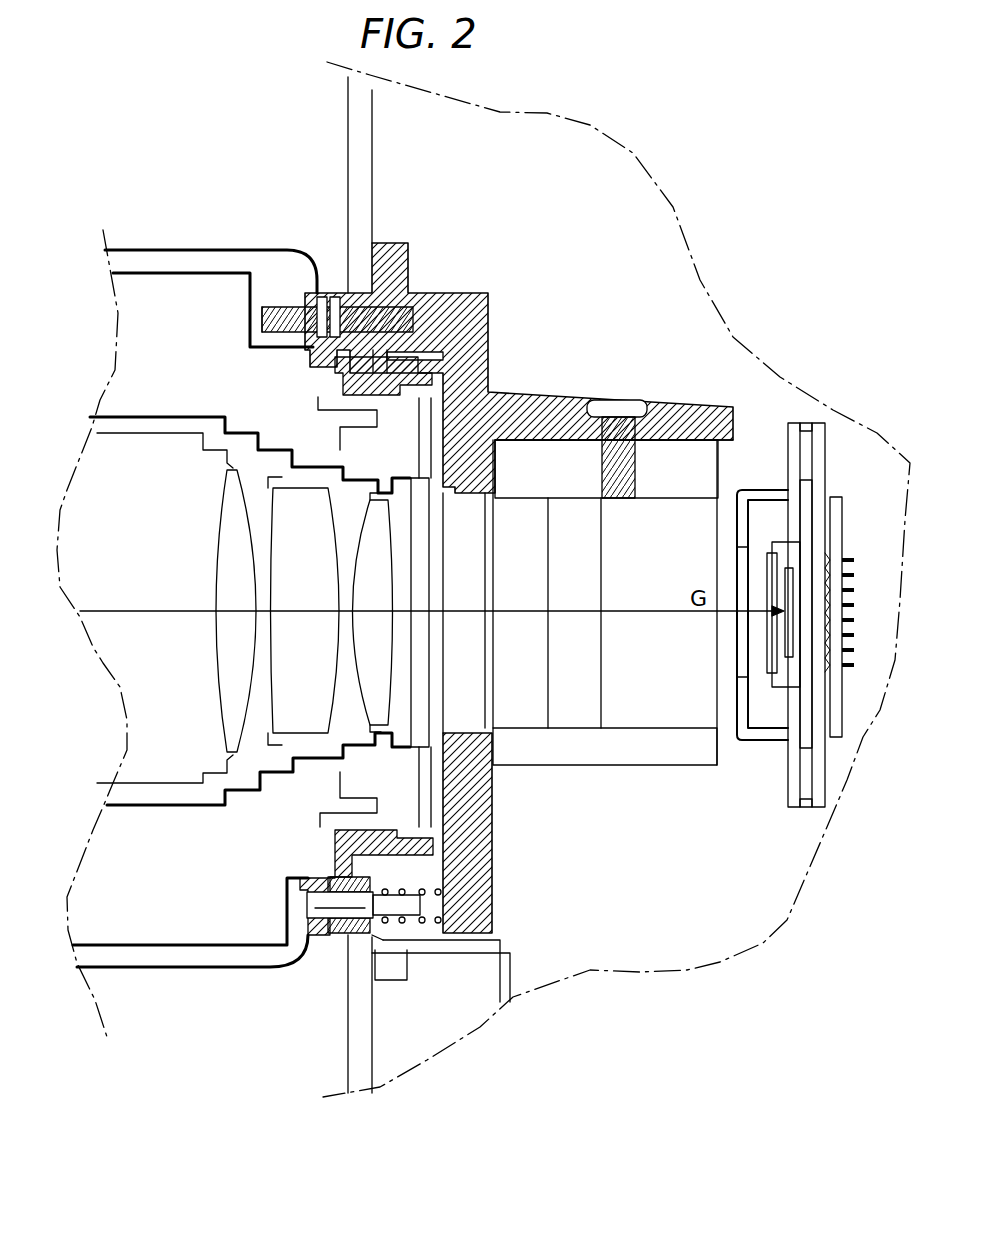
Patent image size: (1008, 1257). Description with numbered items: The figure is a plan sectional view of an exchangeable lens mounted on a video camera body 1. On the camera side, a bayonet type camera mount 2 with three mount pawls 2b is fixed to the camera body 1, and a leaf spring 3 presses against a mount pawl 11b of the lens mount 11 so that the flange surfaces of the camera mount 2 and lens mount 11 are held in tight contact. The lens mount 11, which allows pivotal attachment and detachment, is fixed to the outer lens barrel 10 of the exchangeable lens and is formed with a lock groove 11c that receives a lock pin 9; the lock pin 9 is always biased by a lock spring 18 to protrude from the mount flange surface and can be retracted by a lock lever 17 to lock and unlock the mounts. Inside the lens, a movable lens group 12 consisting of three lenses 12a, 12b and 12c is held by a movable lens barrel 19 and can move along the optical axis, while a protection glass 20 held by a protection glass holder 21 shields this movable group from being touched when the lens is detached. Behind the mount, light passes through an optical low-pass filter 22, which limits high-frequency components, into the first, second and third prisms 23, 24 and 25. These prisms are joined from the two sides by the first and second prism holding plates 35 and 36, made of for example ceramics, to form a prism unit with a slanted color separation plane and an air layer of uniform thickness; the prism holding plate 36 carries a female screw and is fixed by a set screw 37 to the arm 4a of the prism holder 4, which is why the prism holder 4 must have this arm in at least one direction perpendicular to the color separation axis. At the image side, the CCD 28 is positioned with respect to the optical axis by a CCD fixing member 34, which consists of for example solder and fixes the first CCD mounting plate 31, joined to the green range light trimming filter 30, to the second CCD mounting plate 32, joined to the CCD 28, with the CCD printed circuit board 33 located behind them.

The video camera body 1 is at (362, 173).
The camera mount 2 is at (355, 303).
The mount pawls 2b is at (307, 347).
The leaf spring 3 is at (447, 353).
The prism holder 4 is at (453, 305).
The arm 4a is at (568, 405).
The lock pin 9 is at (340, 917).
The outer lens barrel 10 is at (182, 258).
The lens mount 11 is at (337, 370).
The mount pawls 11b is at (400, 366).
The lock groove 11c is at (310, 870).
The lens group 12 is at (118, 502).
The lens 12a is at (223, 543).
The lens 12b is at (283, 572).
The lens 12c is at (353, 592).
The lock lever 17 is at (460, 947).
The lock spring 18 is at (410, 920).
The movable lens barrel 19 is at (145, 793).
The protection glass 20 is at (402, 798).
The protection glass holder 21 is at (418, 742).
The optical low-pass filter 22 is at (457, 722).
The first prism 23 is at (520, 715).
The second prism 24 is at (573, 715).
The third prism 25 is at (687, 720).
The CCD 28 is at (785, 543).
The green range light trimming filter 30 is at (725, 717).
The CCD mounting plate 31 is at (763, 490).
The CCD mounting plate 32 is at (820, 457).
The CCD printed circuit board 33 is at (840, 500).
The CCD fixing member 34 is at (808, 430).
The first prism holding plate 35 is at (688, 450).
The second prism holding plate 36 is at (642, 752).
The set screw 37 is at (619, 410).